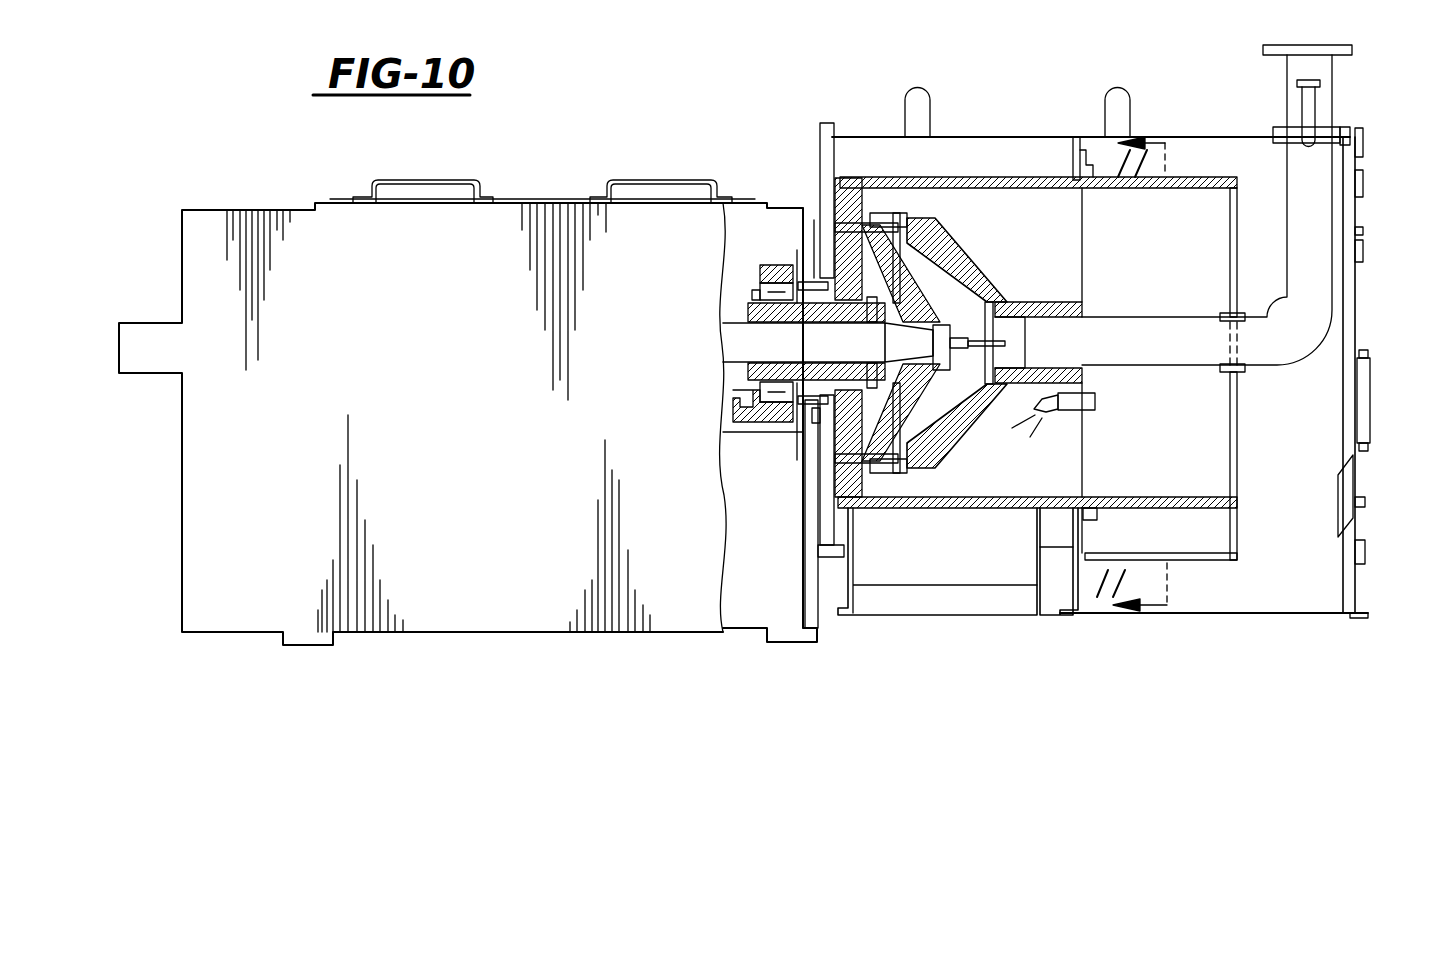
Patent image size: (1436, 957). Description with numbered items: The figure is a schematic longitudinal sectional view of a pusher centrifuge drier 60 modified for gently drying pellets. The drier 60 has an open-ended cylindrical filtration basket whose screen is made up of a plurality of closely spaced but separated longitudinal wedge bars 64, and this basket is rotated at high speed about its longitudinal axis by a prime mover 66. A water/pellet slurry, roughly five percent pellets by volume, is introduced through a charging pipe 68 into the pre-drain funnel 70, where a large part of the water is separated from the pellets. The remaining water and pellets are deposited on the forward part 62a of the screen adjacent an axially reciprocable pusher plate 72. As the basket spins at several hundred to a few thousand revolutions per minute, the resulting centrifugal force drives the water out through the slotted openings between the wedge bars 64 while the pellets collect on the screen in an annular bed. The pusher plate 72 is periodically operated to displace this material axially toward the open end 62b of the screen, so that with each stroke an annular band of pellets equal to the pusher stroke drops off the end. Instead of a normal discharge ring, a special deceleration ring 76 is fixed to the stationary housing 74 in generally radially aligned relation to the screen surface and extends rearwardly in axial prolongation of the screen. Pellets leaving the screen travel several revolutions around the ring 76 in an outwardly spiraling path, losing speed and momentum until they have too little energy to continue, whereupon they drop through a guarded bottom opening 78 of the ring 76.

The drier 60 is at (1004, 94).
The forward part of the screen 62a is at (891, 487).
The open end of the screen 62b is at (1035, 487).
The longitudinal wedge bars 64 is at (1027, 192).
The prime mover 66 is at (660, 633).
The charging pipe 68 is at (1307, 208).
The pre-drain funnel 70 is at (958, 265).
The pusher plate 72 is at (868, 442).
The housing 74 is at (1183, 615).
The deceleration ring 76 is at (1212, 178).
The guarded bottom opening 78 is at (1213, 538).